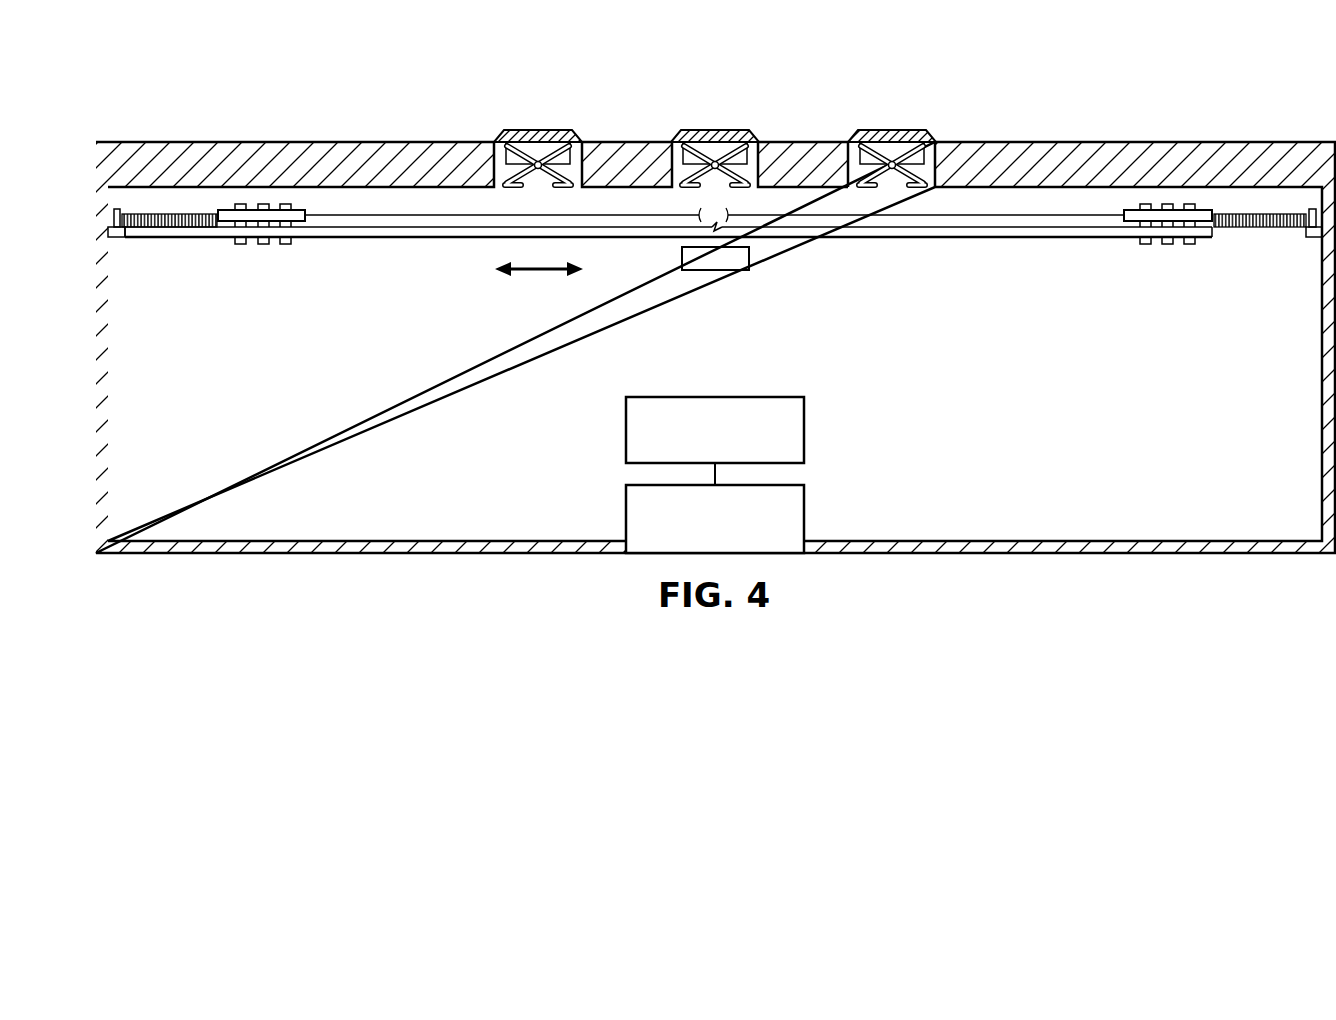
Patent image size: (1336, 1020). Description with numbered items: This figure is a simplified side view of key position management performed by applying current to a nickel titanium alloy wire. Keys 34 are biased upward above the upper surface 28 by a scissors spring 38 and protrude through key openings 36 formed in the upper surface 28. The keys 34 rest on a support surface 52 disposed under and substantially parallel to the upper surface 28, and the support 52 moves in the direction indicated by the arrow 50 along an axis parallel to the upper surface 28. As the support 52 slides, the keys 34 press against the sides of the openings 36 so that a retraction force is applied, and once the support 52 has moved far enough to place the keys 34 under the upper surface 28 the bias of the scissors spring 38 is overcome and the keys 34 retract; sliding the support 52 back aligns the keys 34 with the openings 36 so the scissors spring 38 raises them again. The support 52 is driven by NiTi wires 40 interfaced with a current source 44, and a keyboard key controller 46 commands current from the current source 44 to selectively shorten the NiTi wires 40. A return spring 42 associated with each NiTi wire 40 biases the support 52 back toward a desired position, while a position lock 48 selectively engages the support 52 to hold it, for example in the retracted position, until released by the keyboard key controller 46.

The upper surface 28 is at (941, 91).
The key 34 is at (537, 128).
The key opening 36 is at (908, 190).
The scissors spring 38 is at (866, 188).
The nickel titanium alloy wire 40 is at (406, 216).
The return spring 42 is at (176, 235).
The current source 44 is at (804, 517).
The keyboard key controller 46 is at (806, 431).
The position lock 48 is at (718, 272).
The arrow 50 is at (538, 273).
The support surface 52 is at (318, 234).